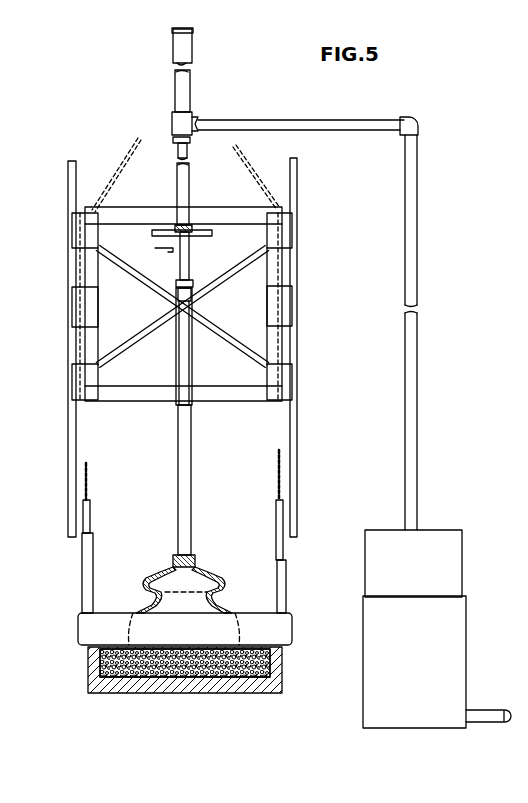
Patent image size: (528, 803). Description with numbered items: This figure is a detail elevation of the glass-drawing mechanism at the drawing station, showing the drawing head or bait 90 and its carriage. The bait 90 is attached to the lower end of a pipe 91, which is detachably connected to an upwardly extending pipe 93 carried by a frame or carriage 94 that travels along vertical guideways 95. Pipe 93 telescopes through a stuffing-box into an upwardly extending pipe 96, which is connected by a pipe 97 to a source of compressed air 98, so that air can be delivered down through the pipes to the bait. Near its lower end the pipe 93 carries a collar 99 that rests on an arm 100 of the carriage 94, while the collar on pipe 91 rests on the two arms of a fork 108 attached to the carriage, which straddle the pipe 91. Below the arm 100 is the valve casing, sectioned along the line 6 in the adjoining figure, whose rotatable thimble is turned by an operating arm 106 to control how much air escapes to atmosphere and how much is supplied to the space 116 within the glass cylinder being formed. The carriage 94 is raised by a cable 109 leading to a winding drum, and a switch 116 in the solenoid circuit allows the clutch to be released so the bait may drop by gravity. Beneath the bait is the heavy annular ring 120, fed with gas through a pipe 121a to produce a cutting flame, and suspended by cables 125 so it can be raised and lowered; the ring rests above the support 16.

The section line 6— 6 is at (177, 192).
The support block / base tray 16 is at (88, 673).
The drawing head or bait 90 is at (204, 573).
The pipe 91 is at (191, 492).
The upwardly extending pipe 93 is at (190, 184).
The frame or carriage 94 is at (268, 306).
The vertical guideways 95 is at (74, 434).
The upwardly extending pipe 96 is at (186, 96).
The pipe 97 is at (417, 206).
The source of compressed air 98 is at (443, 540).
The collar 99 is at (192, 227).
The arm 100 is at (152, 233).
The operating arm 106 is at (163, 252).
The fork 108 is at (192, 281).
The cable 109 is at (124, 158).
The switch 116 is at (145, 605).
The annular ring 120 is at (290, 633).
The pipe 121a is at (286, 592).
The cables 125 is at (88, 480).